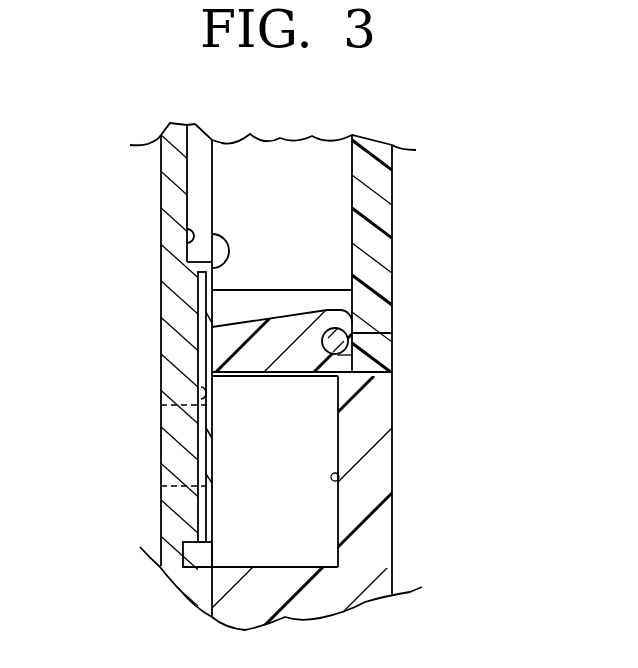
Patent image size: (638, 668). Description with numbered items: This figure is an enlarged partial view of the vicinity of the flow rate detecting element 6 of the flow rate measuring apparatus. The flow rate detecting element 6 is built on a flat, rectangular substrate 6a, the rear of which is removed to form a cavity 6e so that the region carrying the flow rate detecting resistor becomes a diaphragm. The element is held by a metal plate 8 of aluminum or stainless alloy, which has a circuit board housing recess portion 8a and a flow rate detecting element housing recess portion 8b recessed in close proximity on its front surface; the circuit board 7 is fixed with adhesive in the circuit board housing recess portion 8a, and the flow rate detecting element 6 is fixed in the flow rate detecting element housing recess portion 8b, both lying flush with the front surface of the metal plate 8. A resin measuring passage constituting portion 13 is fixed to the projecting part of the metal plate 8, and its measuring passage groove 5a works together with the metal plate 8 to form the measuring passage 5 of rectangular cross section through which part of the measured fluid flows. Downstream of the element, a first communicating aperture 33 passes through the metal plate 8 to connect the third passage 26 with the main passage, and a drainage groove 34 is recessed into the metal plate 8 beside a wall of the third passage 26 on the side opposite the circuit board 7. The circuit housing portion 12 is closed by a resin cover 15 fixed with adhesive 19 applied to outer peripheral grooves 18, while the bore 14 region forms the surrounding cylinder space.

The measuring passage 5 is at (322, 440).
The measuring passage groove 5a is at (340, 478).
The flow rate detecting element 6 is at (194, 340).
The substrate 6a is at (190, 358).
The cavity 6e is at (197, 462).
The circuit board 7 is at (197, 203).
The metal plate 8 is at (160, 292).
The circuit board housing recess portion 8a is at (182, 245).
The flow rate detecting element housing recess portion 8b is at (200, 392).
The circuit housing portion 12 is at (322, 362).
The measuring passage constituting portion 13 is at (368, 510).
The bore 14 is at (237, 260).
The resin cover 15 is at (378, 204).
The outer peripheral grooves 18 is at (353, 313).
The adhesive 19 is at (348, 330).
The third passage 26 is at (233, 510).
The first communicating aperture 33 is at (177, 432).
The drainage groove 34 is at (192, 558).